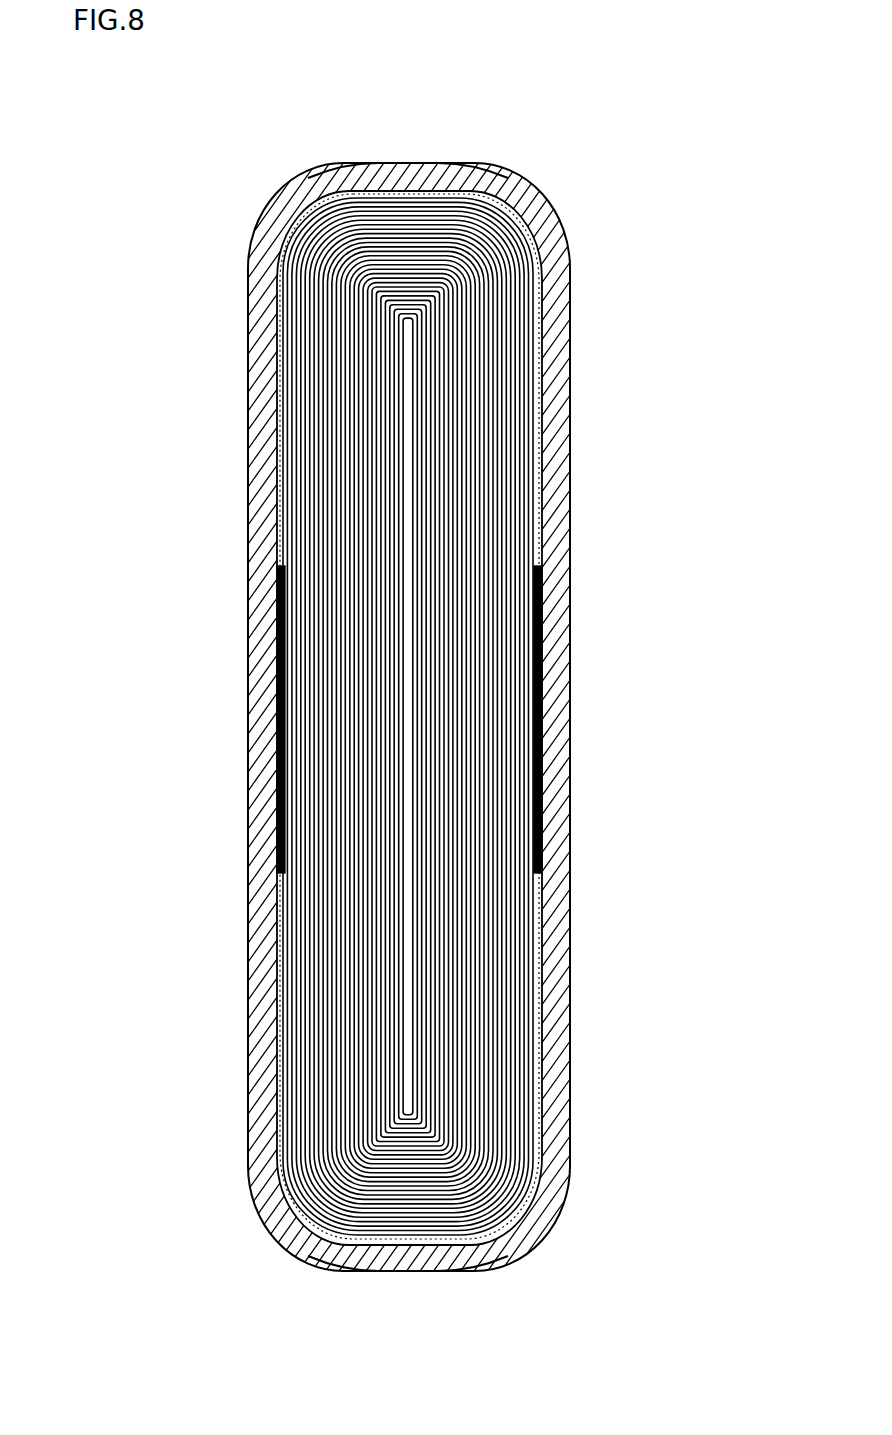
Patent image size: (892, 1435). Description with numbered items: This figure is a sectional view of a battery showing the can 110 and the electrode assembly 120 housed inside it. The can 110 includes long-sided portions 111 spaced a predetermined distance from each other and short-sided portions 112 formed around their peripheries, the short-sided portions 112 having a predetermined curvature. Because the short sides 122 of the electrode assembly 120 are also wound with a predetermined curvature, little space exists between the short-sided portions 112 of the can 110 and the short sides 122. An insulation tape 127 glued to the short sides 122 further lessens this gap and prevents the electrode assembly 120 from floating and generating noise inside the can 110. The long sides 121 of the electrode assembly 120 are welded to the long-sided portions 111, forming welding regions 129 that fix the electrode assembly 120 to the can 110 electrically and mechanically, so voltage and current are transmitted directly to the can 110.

The can 110 is at (570, 185).
The long-sided portions 111 is at (255, 392).
The short-sided portions 112 is at (383, 152).
The electrode assembly 120 is at (423, 716).
The long sides 121 is at (273, 922).
The short sides 122 is at (402, 1233).
The insulation tape 127 is at (273, 1133).
The welding regions 129 is at (267, 640).